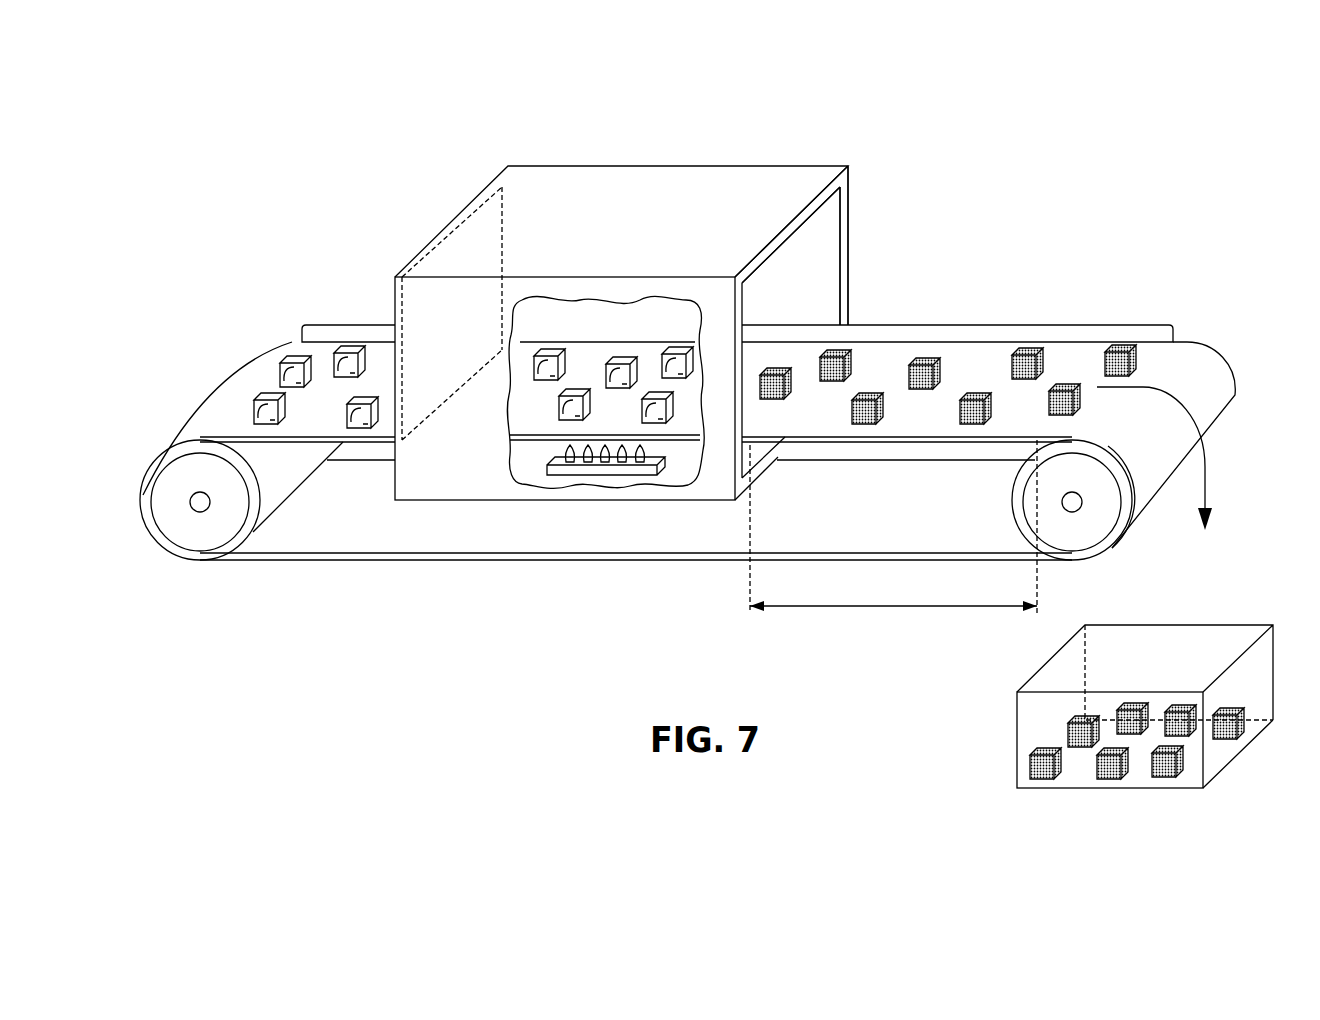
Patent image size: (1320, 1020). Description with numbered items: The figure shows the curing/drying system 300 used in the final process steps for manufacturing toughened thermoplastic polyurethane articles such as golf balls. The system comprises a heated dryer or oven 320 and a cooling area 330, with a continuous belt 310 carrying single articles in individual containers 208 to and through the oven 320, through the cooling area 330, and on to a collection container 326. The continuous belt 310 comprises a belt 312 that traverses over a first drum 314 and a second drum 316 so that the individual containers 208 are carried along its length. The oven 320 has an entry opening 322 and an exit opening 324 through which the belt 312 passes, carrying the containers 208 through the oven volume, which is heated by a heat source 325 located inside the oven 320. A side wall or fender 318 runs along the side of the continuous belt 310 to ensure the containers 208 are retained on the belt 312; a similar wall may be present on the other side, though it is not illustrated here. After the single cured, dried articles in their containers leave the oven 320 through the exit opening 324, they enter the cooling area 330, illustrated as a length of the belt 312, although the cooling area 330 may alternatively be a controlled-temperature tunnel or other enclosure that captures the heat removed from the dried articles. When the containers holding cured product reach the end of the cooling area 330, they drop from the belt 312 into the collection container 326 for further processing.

The curing/drying system 300 is at (418, 127).
The continuous belt 310 is at (290, 583).
The belt 312 is at (493, 533).
The first drum 314 is at (190, 533).
The second drum 316 is at (1092, 523).
The side wall or fender 318 is at (1077, 333).
The heated dryer 320 is at (738, 180).
The entry opening 322 is at (453, 247).
The exit opening 324 is at (822, 252).
The heat source 325 is at (607, 474).
The collection container 326 is at (1017, 728).
The cooling area 330 is at (895, 608).
The individual containers 208 is at (347, 352).